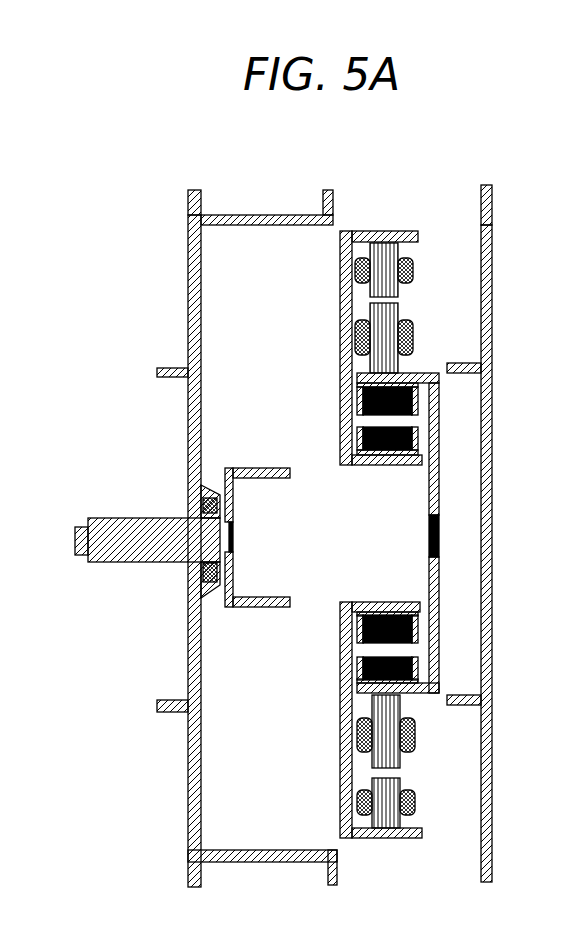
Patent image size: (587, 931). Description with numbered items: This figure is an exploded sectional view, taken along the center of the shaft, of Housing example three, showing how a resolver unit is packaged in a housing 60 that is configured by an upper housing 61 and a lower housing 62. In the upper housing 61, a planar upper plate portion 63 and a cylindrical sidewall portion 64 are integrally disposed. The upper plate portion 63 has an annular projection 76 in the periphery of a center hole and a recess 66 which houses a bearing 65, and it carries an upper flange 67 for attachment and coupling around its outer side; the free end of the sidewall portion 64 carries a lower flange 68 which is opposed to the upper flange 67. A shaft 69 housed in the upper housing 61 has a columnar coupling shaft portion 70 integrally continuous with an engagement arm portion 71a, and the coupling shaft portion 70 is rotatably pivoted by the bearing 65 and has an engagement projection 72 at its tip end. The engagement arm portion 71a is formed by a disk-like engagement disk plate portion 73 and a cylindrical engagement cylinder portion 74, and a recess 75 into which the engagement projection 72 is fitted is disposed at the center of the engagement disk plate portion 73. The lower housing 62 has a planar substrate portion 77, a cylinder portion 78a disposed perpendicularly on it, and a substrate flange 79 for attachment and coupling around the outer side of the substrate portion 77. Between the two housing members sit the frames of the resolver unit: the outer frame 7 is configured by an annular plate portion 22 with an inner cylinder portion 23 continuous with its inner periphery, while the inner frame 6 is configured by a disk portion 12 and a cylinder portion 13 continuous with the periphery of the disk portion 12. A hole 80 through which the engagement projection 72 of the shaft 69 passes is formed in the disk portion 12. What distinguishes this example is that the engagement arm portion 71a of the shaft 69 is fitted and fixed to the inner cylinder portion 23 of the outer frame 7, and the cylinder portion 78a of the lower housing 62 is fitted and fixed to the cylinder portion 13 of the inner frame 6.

The housing 60 is at (228, 499).
The upper housing 61 is at (240, 511).
The lower housing 62 is at (515, 498).
The upper plate portion 63 is at (188, 290).
The sidewall portion 64 is at (288, 215).
The bearing 65 is at (190, 500).
The recess 66 is at (210, 497).
The upper flange 67 is at (205, 190).
The lower flange 68 is at (333, 190).
The shaft 69 is at (178, 539).
The coupling shaft portion 70 is at (162, 563).
The engagement arm portion 71a is at (268, 539).
The engagement projection 72 is at (82, 558).
The engagement disk plate portion 73 is at (232, 582).
The engagement cylinder portion 74 is at (260, 607).
The recess 75 is at (232, 537).
The annular projection 76 is at (168, 368).
The substrate portion 77 is at (492, 283).
The cylinder portion 78a is at (468, 363).
The substrate flange 79 is at (492, 212).
The hole 80 is at (440, 540).
The outer frame 7 is at (356, 534).
The annular plate portion 22 is at (340, 350).
The inner frame 6 is at (449, 533).
The disk portion 12 is at (432, 590).
The inner cylinder portion 23 is at (382, 465).
The cylinder portion 13 is at (425, 695).